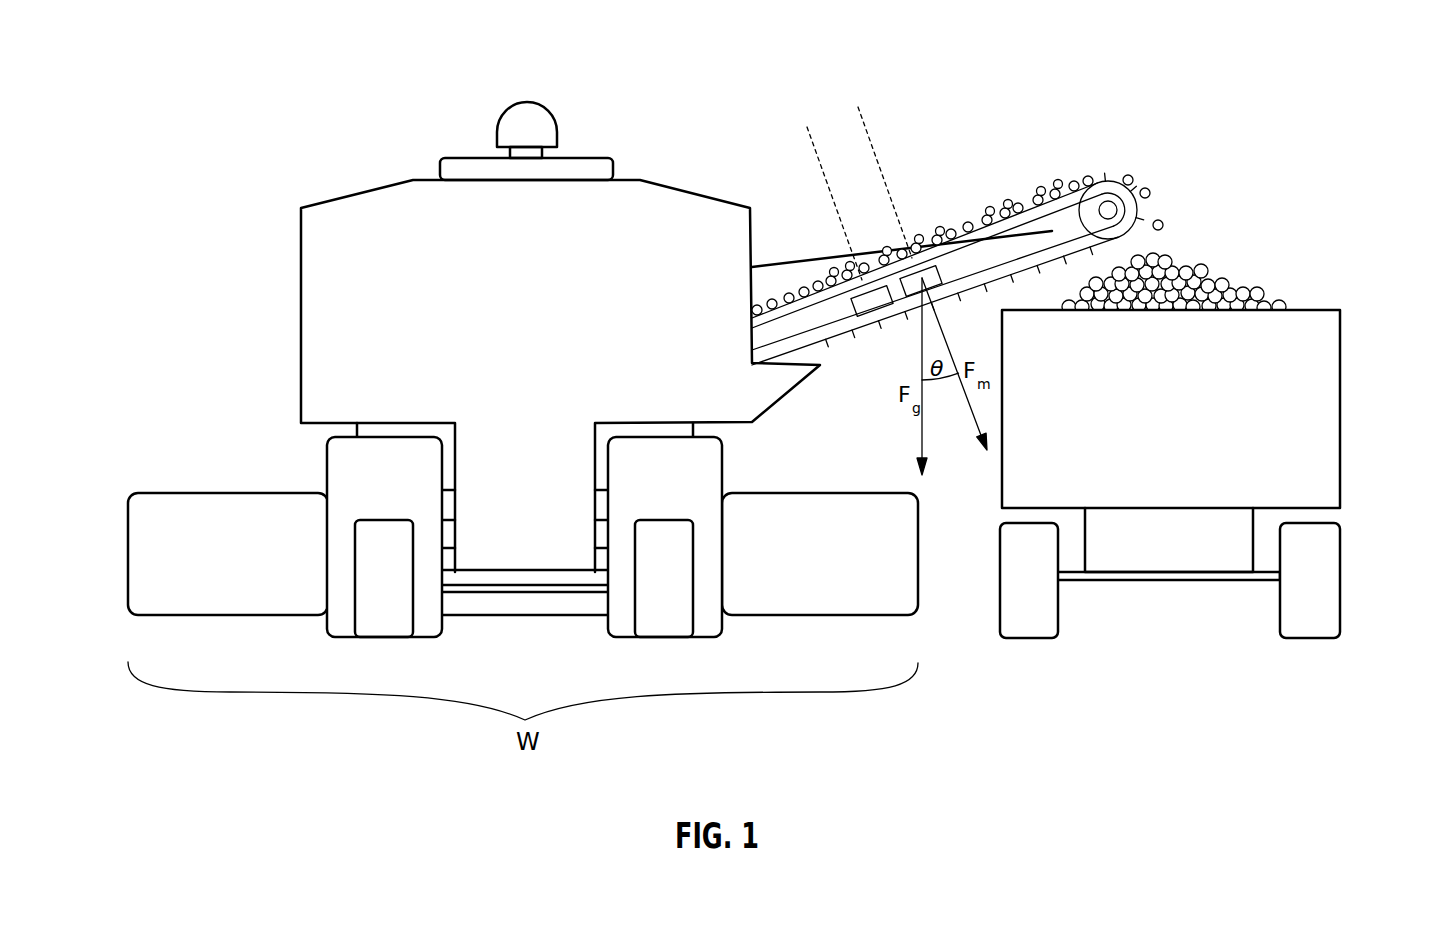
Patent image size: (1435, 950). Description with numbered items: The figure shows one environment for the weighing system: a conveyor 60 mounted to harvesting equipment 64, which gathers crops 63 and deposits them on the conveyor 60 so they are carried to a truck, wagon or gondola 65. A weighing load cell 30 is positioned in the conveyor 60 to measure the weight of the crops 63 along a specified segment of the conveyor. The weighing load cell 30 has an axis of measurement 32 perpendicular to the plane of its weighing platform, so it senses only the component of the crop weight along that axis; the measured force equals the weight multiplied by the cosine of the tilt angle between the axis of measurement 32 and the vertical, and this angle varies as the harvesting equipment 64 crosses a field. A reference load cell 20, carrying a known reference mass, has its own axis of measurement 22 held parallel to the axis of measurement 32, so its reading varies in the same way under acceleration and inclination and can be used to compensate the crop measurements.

The reference load cell 20 is at (873, 303).
The axis of measurement 22 is at (823, 175).
The weighing load cell 30 is at (922, 278).
The axis of measurement 32 is at (866, 133).
The conveyor 60 is at (957, 187).
The crops 63 is at (1050, 187).
The harvesting equipment 64 is at (322, 277).
The truck, wagons or gondola 65 is at (1303, 406).